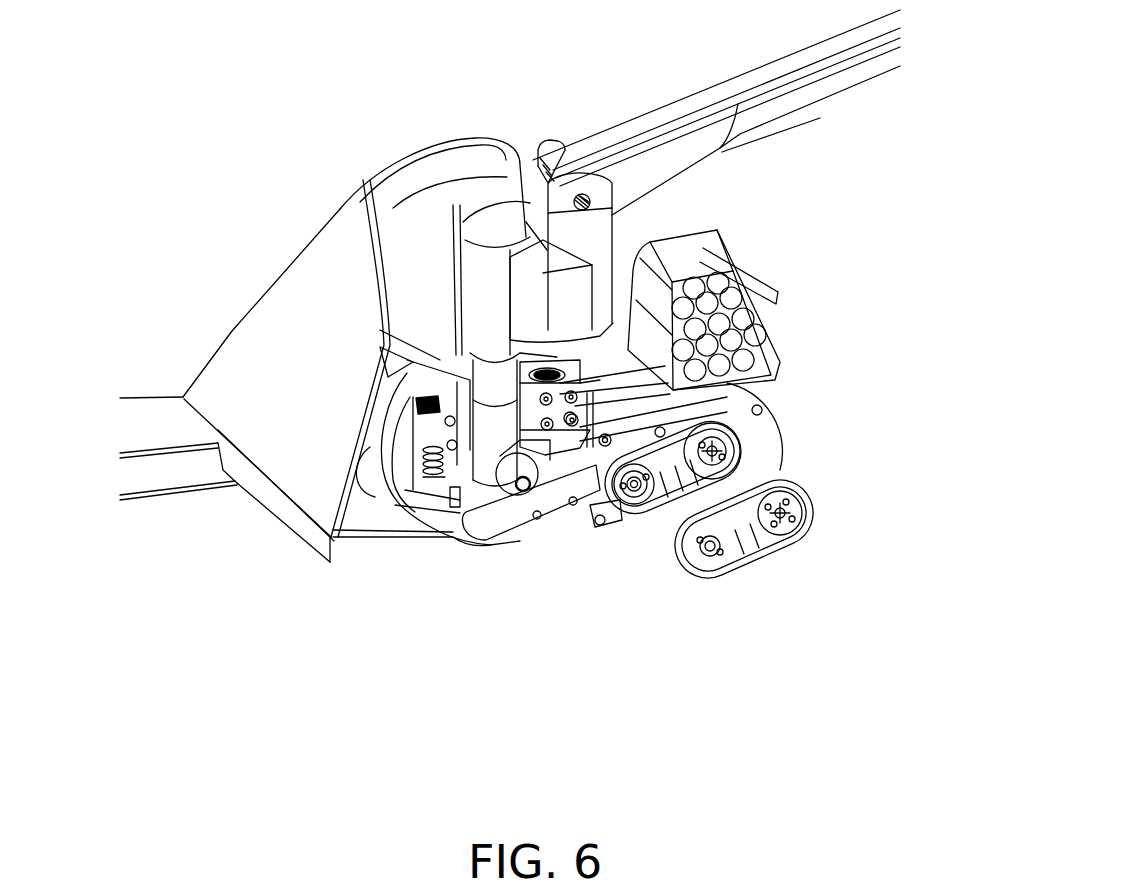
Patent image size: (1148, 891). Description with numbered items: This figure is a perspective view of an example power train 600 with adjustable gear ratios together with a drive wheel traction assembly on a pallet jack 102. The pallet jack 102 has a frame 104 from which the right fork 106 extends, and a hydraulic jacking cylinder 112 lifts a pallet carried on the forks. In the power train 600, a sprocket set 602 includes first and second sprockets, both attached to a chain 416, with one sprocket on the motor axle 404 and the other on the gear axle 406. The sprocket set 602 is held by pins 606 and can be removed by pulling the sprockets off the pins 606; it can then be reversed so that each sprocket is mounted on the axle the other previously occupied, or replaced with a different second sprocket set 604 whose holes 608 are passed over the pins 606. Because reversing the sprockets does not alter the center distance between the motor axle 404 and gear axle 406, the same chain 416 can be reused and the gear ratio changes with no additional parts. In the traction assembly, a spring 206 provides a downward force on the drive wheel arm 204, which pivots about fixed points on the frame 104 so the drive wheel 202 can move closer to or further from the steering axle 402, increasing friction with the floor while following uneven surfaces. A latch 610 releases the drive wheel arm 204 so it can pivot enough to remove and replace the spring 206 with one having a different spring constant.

The pallet jack 102 is at (240, 161).
The frame 104 is at (287, 266).
The right fork 106 is at (159, 418).
The hydraulic jacking cylinder 112 is at (494, 376).
The drive wheel 202 is at (490, 543).
The drive wheel arm 204 is at (530, 533).
The spring 206 is at (427, 453).
The steering axle 402 is at (522, 490).
The motor axle 404 is at (713, 455).
The gear axle 406 is at (643, 480).
The chain 416 is at (702, 480).
The power train 600 is at (526, 710).
The sprocket set 602 is at (619, 509).
The second sprocket set 604 is at (693, 571).
The pins 606 is at (640, 494).
The holes 608 is at (722, 548).
The latch 610 is at (412, 460).